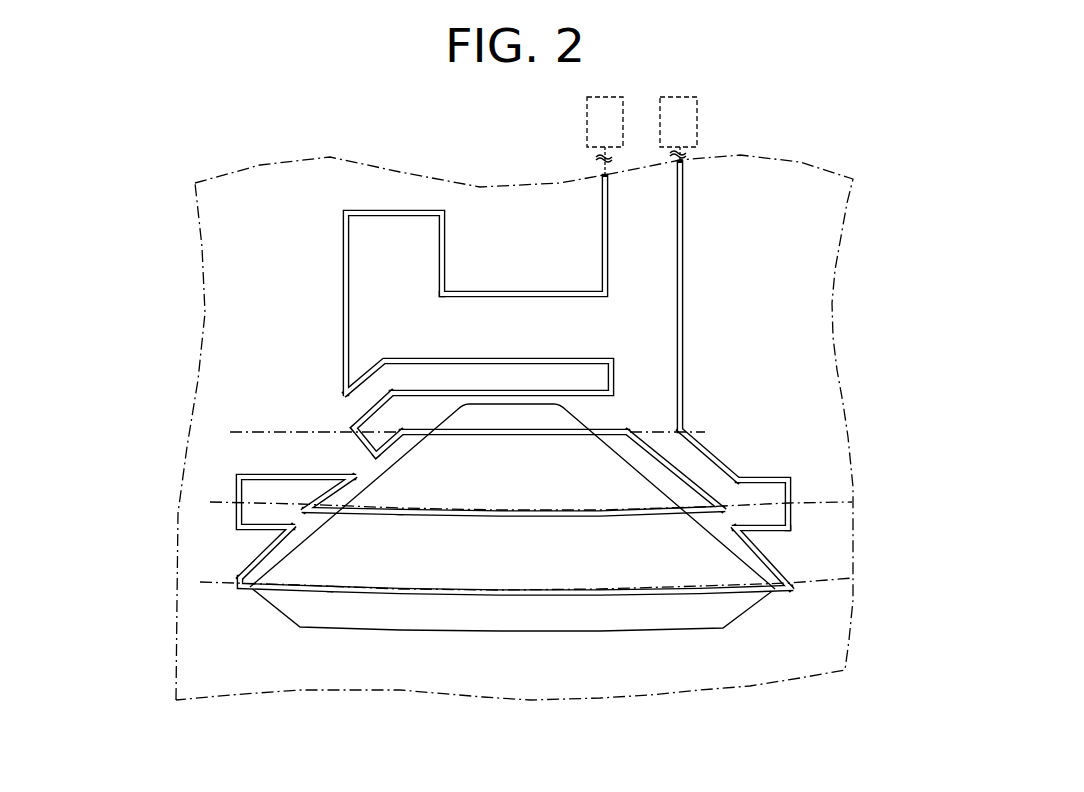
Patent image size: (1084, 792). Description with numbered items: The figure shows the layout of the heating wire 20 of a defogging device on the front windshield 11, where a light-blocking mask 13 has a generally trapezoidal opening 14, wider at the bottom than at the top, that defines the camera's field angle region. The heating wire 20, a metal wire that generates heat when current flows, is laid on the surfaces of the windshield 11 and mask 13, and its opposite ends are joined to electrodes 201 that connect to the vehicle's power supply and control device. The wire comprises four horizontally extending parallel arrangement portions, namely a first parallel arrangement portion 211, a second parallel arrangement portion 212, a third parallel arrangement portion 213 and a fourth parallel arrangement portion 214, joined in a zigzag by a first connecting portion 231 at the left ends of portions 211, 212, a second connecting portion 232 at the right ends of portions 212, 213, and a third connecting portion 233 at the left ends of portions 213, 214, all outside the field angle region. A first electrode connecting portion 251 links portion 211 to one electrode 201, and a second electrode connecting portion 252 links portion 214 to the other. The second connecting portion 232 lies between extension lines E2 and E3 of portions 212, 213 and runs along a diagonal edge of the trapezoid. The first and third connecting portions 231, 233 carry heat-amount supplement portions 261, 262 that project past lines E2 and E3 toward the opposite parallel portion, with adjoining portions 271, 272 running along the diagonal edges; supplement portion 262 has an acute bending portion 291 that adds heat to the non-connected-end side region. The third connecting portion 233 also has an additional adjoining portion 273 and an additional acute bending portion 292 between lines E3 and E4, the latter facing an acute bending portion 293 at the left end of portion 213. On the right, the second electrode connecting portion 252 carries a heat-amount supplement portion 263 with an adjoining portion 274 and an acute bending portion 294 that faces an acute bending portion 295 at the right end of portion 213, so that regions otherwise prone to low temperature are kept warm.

The front windshield 11 is at (275, 180).
The mask 13 is at (222, 260).
The opening 14 is at (482, 615).
The heating wire 20 is at (503, 290).
The electrode 201 is at (585, 115).
The first parallel arrangement portion 211 is at (523, 390).
The second parallel arrangement portion 212 is at (537, 432).
The third parallel arrangement portion 213 is at (522, 514).
The fourth parallel arrangement portion 214 is at (553, 600).
The first connecting portion 231 is at (362, 415).
The second connecting portion 232 is at (680, 475).
The third connecting portion 233 is at (290, 531).
The first electrode connecting portion 251 is at (392, 208).
The second electrode connecting portion 252 is at (683, 223).
The heat-amount supplement portion 261 is at (362, 440).
The heat-amount supplement portion 262 is at (236, 478).
The heat-amount supplement portion 263 is at (757, 552).
The adjoining portion 271 is at (372, 458).
The adjoining portion 272 is at (345, 525).
The additional adjoining portion 273 is at (240, 558).
The adjoining portion 274 is at (778, 556).
The acute bending portion 291 is at (398, 480).
The additional acute bending portion 292 is at (255, 587).
The acute bending portion 293 is at (283, 592).
The acute bending portion 294 is at (765, 540).
The acute bending portion 295 is at (742, 480).
The extension line E2 is at (230, 432).
The extension line E3 is at (235, 503).
The extension line E4 is at (220, 582).